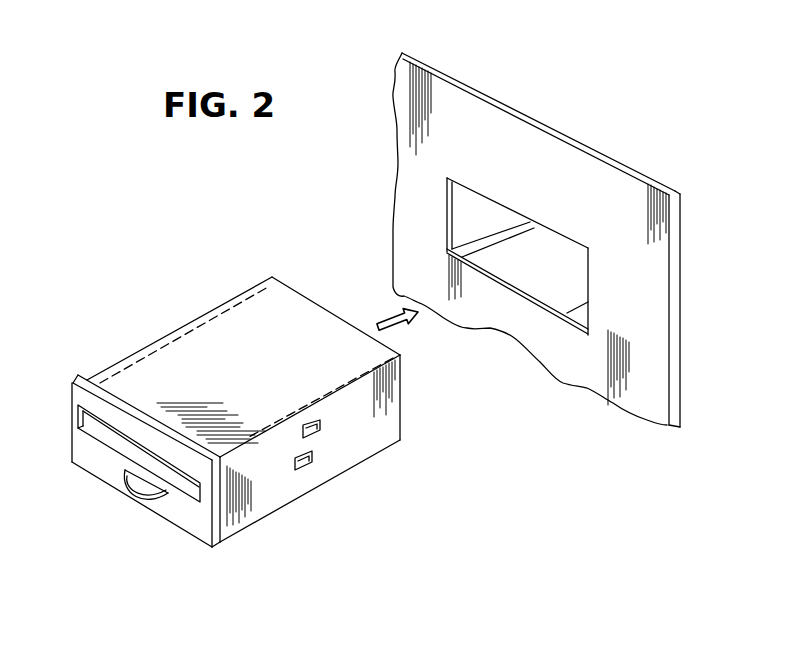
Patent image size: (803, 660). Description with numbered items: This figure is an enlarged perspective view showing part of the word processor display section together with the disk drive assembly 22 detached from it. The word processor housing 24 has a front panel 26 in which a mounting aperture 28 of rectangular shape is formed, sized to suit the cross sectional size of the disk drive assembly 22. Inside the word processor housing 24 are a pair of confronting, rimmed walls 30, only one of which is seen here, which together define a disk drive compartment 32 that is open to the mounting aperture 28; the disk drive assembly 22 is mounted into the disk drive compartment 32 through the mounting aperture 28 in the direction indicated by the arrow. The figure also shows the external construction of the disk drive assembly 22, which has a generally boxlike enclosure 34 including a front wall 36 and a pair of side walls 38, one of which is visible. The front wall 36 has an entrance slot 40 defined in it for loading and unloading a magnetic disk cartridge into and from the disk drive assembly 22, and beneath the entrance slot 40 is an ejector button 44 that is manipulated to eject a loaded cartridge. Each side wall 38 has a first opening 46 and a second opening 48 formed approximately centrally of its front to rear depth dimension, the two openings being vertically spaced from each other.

The disk drive assembly 22 is at (223, 422).
The word processor housing 24 is at (520, 240).
The front panel 26 is at (410, 162).
The mounting aperture 28 is at (539, 245).
The rimmed wall 30 is at (477, 213).
The disk drive compartment 32 is at (528, 278).
The enclosure 34 is at (243, 428).
The front wall 36 is at (133, 468).
The side wall 38 is at (310, 448).
The entrance slot 40 is at (192, 478).
The ejector button 44 is at (128, 478).
The first opening 46 is at (312, 463).
The second opening 48 is at (320, 424).